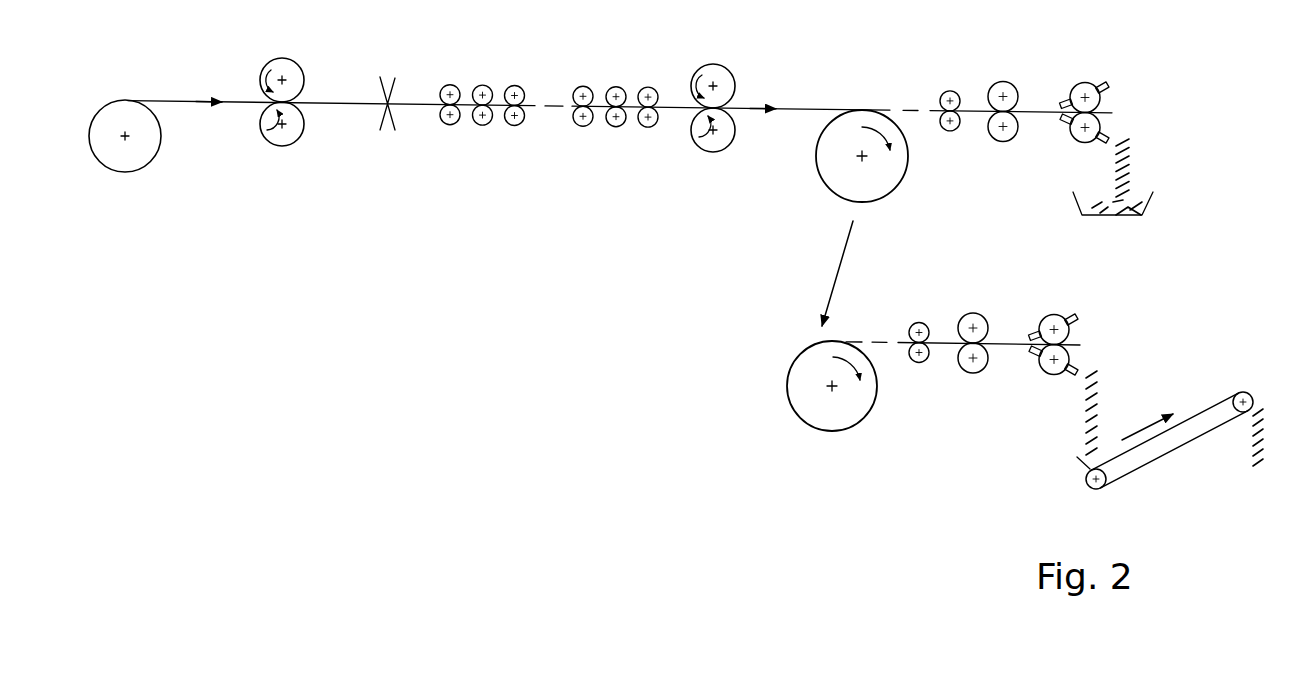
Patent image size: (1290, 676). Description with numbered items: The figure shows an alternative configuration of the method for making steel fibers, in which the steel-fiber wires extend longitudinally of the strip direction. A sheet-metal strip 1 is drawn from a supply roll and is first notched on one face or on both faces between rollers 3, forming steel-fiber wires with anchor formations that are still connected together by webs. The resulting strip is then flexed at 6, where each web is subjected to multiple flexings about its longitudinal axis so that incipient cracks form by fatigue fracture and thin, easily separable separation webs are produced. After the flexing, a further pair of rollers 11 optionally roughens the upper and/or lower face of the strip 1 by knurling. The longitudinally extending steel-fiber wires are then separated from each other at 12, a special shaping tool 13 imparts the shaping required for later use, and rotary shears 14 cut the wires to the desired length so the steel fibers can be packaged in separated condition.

The sheet-metal strip 1 is at (165, 101).
The rollers 3 is at (264, 126).
The flexing 6 is at (600, 77).
The further pair of rollers 11 is at (720, 72).
The separation 12 is at (953, 92).
The shaping tool 13 is at (1002, 82).
The rotary shears 14 is at (1080, 82).